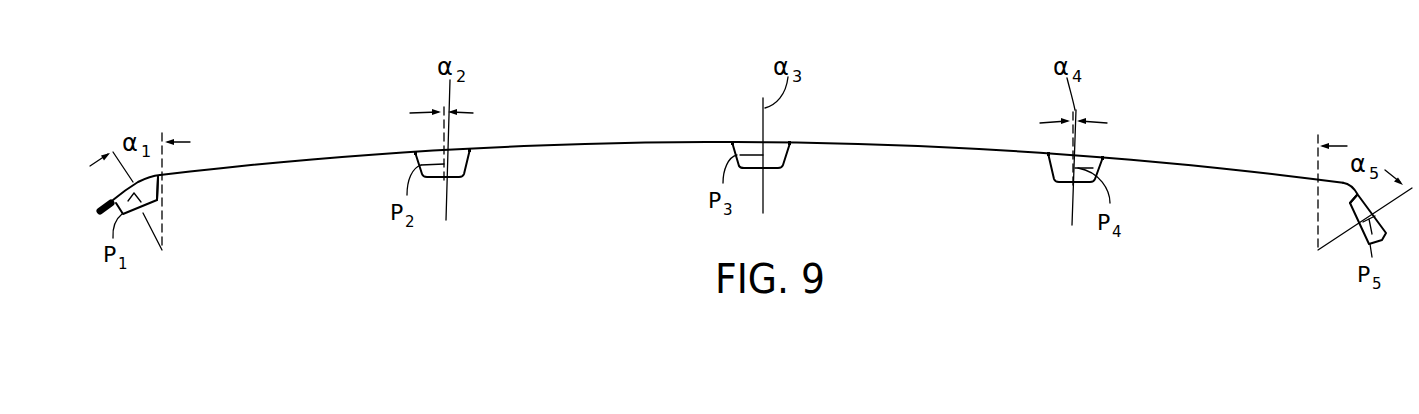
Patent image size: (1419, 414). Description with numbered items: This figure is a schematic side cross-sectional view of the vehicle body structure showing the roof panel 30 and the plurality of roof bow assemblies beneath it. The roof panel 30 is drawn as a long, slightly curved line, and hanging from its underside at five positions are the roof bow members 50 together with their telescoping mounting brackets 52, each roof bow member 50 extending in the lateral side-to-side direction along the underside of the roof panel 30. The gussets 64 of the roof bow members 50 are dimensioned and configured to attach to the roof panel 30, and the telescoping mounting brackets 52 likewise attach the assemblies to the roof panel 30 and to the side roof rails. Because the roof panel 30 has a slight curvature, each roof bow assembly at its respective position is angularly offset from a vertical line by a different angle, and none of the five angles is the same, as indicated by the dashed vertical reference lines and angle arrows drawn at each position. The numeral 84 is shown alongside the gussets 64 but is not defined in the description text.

The roof panel 30 is at (918, 146).
The roof bow member 50 is at (757, 188).
The telescoping mounting bracket 52 is at (168, 190).
The gusset 64 is at (760, 130).
The edge region 84 is at (415, 151).